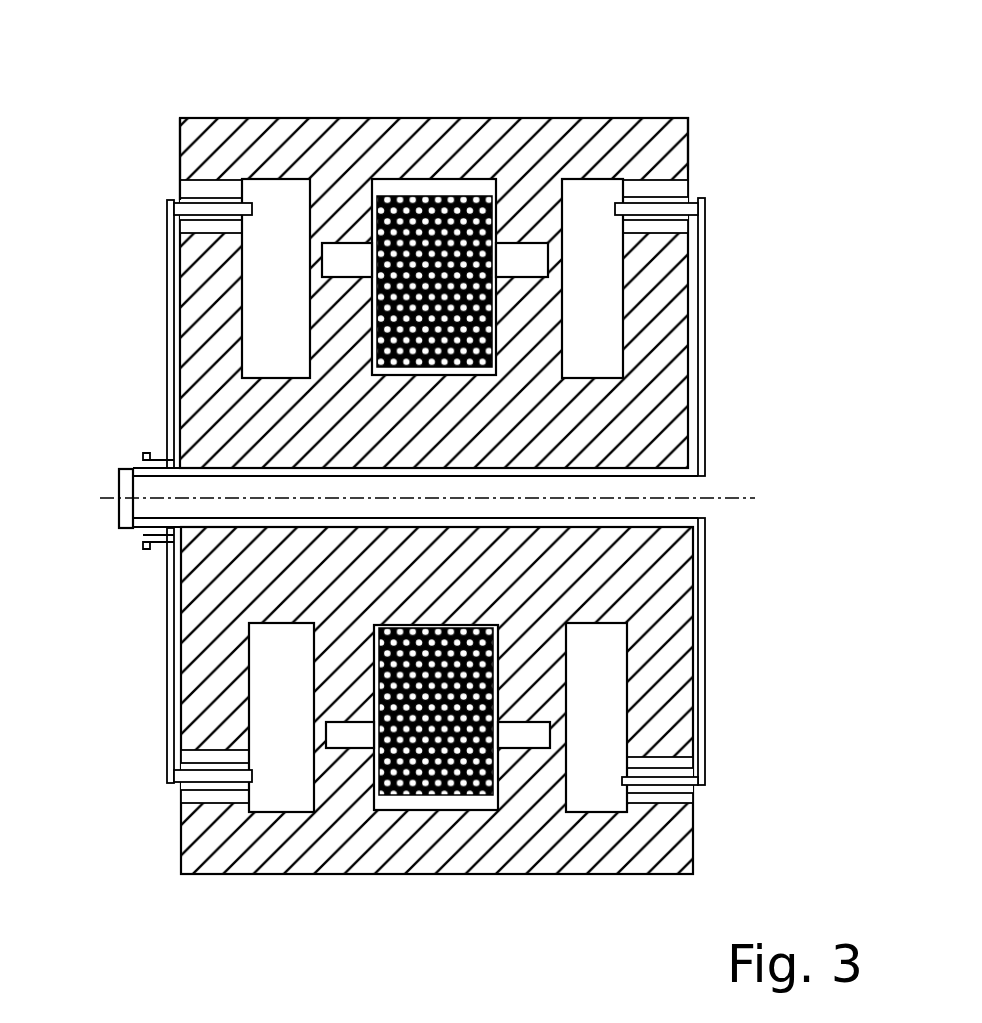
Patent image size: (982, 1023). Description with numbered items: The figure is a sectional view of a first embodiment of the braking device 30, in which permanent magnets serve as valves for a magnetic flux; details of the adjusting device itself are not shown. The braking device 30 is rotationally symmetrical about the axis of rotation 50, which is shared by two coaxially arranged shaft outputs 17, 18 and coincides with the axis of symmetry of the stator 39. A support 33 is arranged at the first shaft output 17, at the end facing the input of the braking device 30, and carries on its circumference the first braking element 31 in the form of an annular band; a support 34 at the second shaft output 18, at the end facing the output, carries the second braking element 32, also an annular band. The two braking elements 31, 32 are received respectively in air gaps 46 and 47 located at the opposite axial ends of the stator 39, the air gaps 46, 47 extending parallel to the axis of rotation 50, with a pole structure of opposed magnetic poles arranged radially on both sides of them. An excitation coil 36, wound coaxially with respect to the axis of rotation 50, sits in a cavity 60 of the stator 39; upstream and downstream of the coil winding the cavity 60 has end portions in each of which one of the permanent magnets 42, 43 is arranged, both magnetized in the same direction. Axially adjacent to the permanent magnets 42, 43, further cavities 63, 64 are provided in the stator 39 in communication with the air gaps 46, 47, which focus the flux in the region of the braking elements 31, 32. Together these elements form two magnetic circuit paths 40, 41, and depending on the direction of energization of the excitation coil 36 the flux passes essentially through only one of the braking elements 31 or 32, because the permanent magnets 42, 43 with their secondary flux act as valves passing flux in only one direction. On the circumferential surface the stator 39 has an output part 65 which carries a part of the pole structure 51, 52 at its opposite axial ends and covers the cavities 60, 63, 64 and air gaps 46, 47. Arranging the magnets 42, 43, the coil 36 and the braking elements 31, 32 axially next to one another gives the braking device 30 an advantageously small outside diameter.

The first shaft output 17 is at (150, 455).
The second shaft output 18 is at (112, 525).
The braking device 30 is at (155, 140).
The first braking element 31 is at (157, 205).
The second braking element 32 is at (665, 208).
The support 33 is at (167, 600).
The support 34 is at (700, 545).
The excitation coil 36 is at (450, 335).
The stator 39 is at (360, 143).
The first magnetic circuit path 40 is at (285, 90).
The second magnetic circuit path 41 is at (586, 90).
The permanent magnet 42 is at (325, 265).
The permanent magnet 43 is at (523, 257).
The air gap 46 is at (276, 790).
The air gap 47 is at (606, 795).
The axis of rotation 50 is at (115, 497).
The pole structure part 51 is at (165, 795).
The pole structure part 52 is at (718, 795).
The cavity 60 is at (408, 190).
The further cavity 63 is at (260, 342).
The further cavity 64 is at (608, 280).
The output part 65 is at (673, 127).